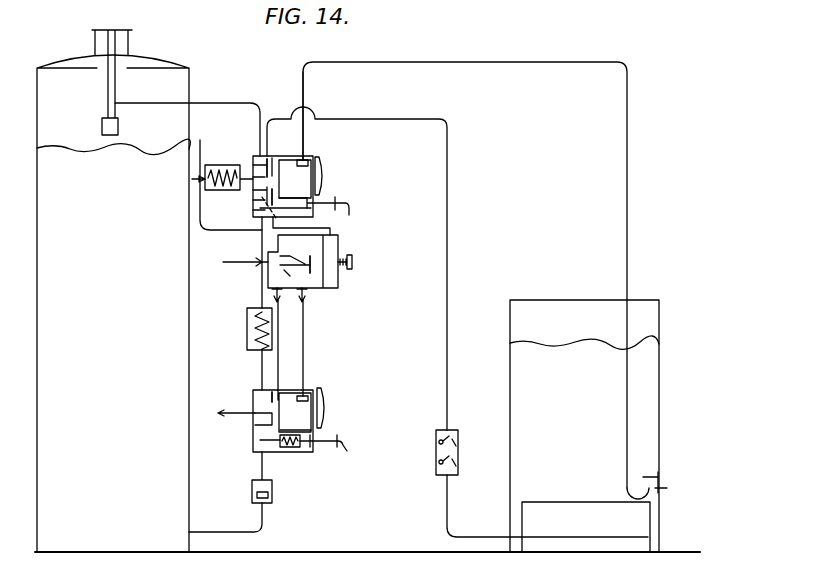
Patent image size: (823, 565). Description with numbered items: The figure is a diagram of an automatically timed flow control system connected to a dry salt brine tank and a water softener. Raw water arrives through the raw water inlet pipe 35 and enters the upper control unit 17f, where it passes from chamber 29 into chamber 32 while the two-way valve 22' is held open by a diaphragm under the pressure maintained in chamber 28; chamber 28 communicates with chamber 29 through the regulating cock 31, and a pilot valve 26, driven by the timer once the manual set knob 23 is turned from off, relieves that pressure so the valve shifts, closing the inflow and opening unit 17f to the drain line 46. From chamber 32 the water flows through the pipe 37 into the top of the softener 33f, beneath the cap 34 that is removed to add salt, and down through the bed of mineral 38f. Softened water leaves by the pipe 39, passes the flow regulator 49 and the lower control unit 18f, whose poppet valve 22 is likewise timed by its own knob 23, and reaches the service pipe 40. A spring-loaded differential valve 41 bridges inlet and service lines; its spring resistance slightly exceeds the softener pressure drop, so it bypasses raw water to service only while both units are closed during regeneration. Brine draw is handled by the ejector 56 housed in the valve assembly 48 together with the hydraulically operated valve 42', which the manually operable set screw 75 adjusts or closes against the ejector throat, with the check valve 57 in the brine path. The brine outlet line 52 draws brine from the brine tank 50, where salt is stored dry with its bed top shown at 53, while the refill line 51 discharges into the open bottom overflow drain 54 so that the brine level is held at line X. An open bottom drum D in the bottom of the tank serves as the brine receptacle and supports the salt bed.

The cap 34 is at (101, 29).
The softener 33f is at (191, 71).
The pipe 37 is at (218, 104).
The bed of mineral 38f is at (68, 149).
The drain line 46 is at (200, 160).
The control unit 17f is at (257, 154).
The two-way valve 22' is at (242, 160).
The spring-loaded differential valve 41 is at (232, 189).
The chamber 32 is at (257, 192).
The chamber 29 is at (254, 214).
The pilot valve 26 is at (305, 159).
The manual set knob 23 is at (322, 176).
The chamber 28 is at (303, 188).
The regulating cock 31 is at (333, 336).
The refill line 51 is at (628, 178).
The pressure regulator 48 is at (338, 242).
The ejector 56 is at (297, 259).
The raw water inlet pipe 35 is at (246, 259).
The set screw 75 is at (352, 262).
The hydraulically operated valve 42' is at (338, 283).
The control unit 18f is at (292, 456).
The poppet valve 22 is at (250, 397).
The service pipe 40 is at (233, 414).
The brine level line X is at (279, 445).
The flow regulator 49 is at (252, 490).
The pipe 39 is at (228, 532).
The check valve 57 is at (460, 452).
The brine outlet line 52 is at (479, 537).
The brine tank 50 is at (508, 421).
The top of salt bed 53 is at (595, 343).
The open bottom overflow drain 54 is at (662, 476).
The open bottom drum D is at (653, 515).